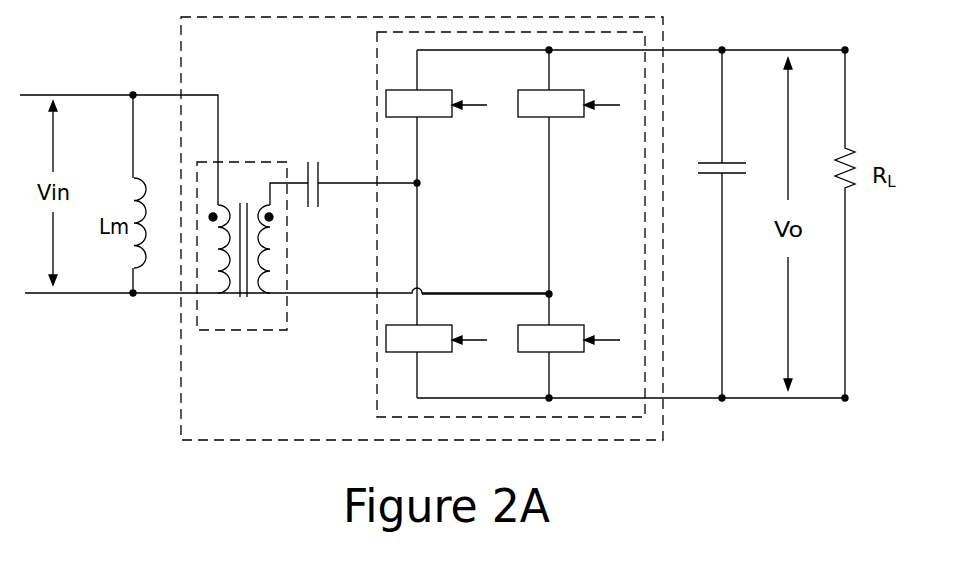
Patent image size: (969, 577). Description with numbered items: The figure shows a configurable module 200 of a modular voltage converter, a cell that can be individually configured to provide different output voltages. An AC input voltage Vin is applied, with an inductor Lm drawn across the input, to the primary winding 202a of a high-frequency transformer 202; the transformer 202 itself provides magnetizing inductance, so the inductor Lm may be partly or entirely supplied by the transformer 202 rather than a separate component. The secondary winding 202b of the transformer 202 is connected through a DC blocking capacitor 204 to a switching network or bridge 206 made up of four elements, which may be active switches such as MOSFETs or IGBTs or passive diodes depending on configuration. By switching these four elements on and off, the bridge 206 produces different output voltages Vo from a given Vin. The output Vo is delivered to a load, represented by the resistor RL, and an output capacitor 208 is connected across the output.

The module 200 is at (181, 50).
The transformer 202 is at (250, 266).
The primary winding 202a is at (223, 305).
The secondary winding 202b is at (260, 305).
The capacitor 204 is at (318, 150).
The bridge 206 is at (377, 68).
The capacitor 208 is at (708, 152).